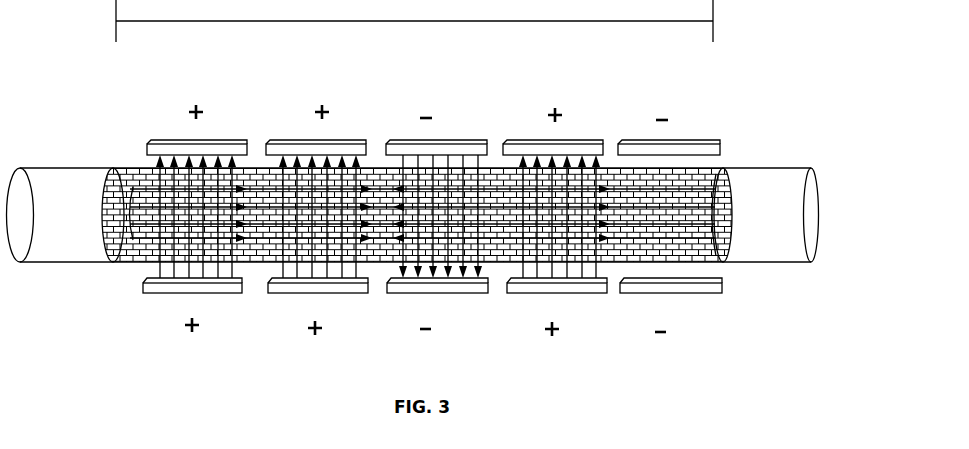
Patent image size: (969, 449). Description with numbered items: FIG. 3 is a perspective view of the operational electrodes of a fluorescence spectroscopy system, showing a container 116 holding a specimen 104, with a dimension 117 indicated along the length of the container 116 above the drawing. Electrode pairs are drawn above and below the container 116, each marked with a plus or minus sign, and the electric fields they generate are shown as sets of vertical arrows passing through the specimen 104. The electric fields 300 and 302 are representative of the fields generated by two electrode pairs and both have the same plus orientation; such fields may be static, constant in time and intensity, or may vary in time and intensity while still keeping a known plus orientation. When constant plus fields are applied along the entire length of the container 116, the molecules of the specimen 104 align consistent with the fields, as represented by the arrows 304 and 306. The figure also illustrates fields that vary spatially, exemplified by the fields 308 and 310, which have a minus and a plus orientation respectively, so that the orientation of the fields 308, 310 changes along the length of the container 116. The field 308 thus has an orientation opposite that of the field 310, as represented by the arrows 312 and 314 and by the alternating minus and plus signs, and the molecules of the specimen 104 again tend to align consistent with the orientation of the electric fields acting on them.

The specimen 104 is at (727, 238).
The container 116 is at (713, 168).
The length of porous region 117 is at (414, 21).
The electric field 300 is at (153, 185).
The electric field 302 is at (280, 187).
The arrow 304 is at (248, 257).
The arrow 306 is at (273, 265).
The electric field 308 is at (408, 175).
The electric field 310 is at (528, 180).
The arrow 312 is at (390, 250).
The arrow 314 is at (603, 243).